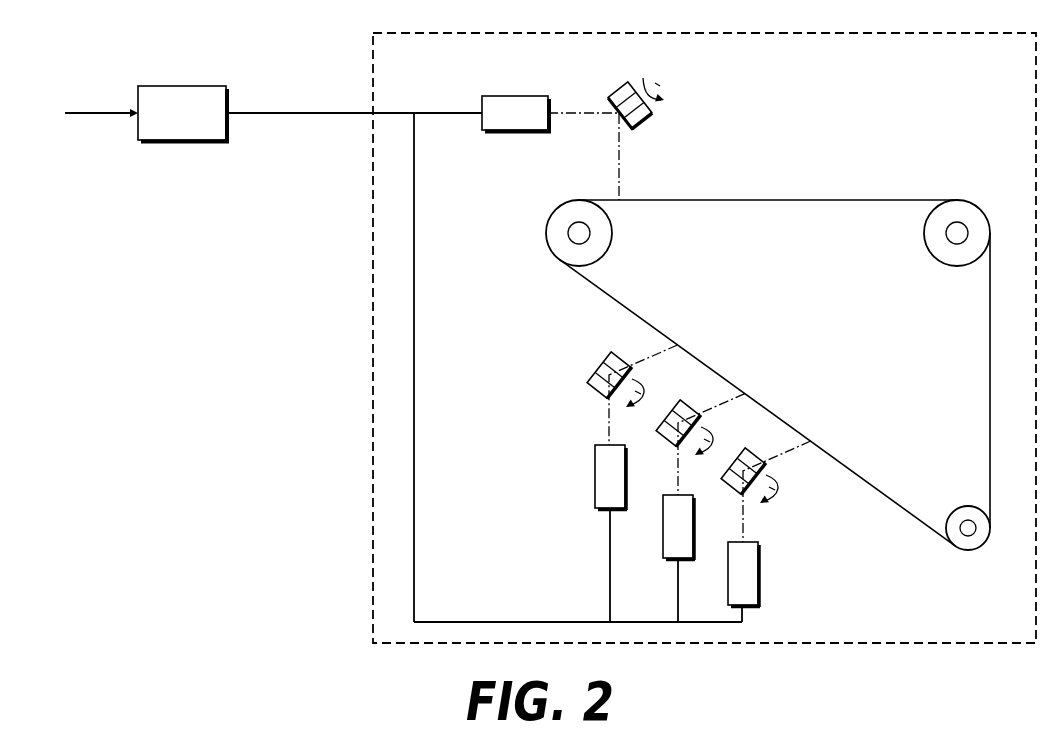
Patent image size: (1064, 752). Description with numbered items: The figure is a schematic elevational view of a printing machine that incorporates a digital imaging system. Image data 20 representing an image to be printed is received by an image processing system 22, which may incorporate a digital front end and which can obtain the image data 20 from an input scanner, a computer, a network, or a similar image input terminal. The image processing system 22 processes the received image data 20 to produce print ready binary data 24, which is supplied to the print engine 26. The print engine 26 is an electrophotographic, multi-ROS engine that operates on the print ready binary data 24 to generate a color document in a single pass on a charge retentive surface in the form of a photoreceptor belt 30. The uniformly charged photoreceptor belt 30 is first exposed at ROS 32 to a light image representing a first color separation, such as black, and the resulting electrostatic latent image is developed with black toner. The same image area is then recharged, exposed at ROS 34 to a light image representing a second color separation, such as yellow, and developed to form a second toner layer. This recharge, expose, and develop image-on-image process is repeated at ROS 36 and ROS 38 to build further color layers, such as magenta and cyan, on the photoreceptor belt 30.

The image data 20 is at (73, 113).
The image processing system 22 is at (180, 86).
The print ready binary data 24 is at (253, 113).
The print engine 26 is at (552, 33).
The photoreceptor belt 30 is at (775, 200).
The ROS 32 is at (641, 82).
The ROS 34 is at (585, 343).
The ROS 36 is at (658, 395).
The ROS 38 is at (724, 440).